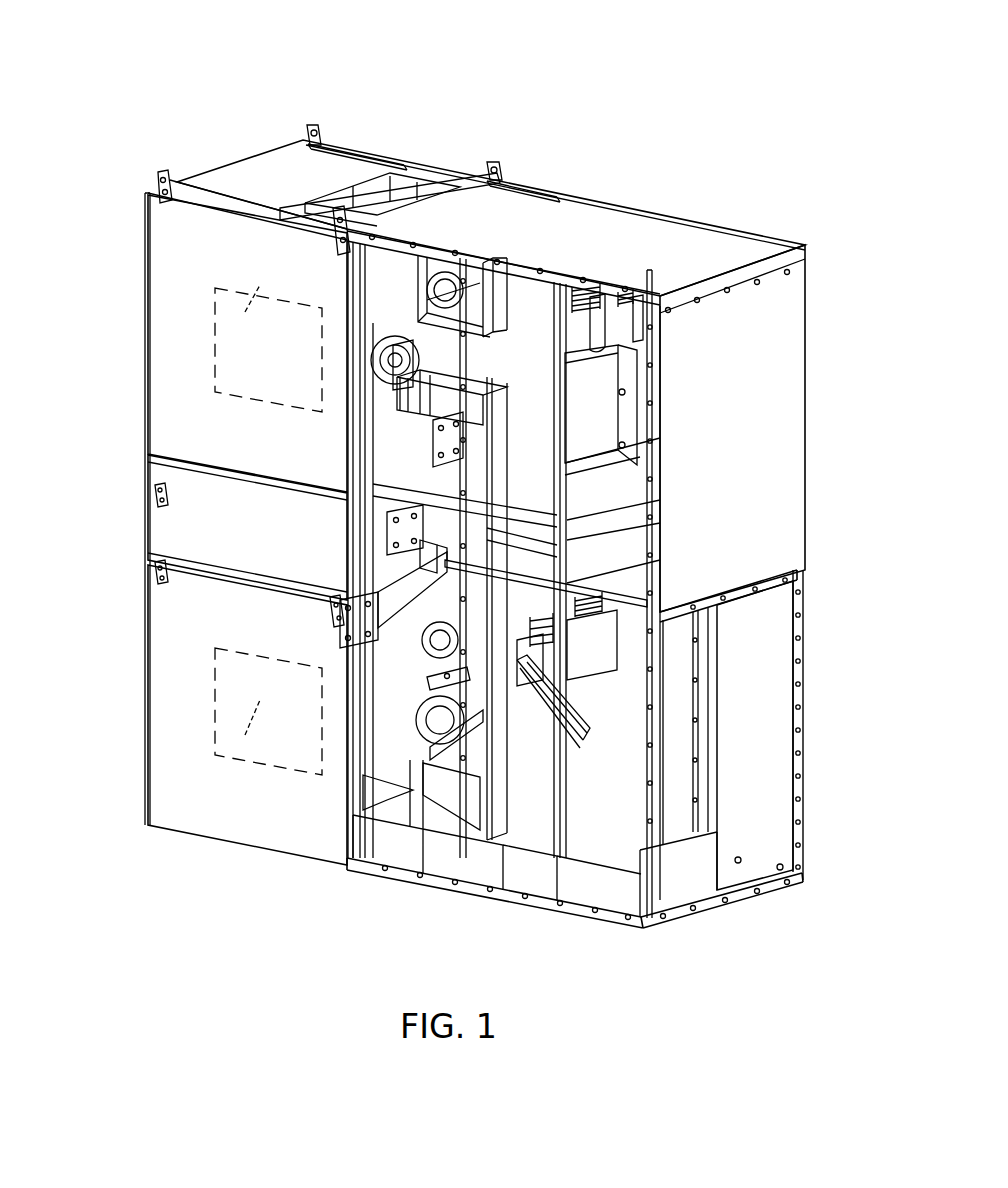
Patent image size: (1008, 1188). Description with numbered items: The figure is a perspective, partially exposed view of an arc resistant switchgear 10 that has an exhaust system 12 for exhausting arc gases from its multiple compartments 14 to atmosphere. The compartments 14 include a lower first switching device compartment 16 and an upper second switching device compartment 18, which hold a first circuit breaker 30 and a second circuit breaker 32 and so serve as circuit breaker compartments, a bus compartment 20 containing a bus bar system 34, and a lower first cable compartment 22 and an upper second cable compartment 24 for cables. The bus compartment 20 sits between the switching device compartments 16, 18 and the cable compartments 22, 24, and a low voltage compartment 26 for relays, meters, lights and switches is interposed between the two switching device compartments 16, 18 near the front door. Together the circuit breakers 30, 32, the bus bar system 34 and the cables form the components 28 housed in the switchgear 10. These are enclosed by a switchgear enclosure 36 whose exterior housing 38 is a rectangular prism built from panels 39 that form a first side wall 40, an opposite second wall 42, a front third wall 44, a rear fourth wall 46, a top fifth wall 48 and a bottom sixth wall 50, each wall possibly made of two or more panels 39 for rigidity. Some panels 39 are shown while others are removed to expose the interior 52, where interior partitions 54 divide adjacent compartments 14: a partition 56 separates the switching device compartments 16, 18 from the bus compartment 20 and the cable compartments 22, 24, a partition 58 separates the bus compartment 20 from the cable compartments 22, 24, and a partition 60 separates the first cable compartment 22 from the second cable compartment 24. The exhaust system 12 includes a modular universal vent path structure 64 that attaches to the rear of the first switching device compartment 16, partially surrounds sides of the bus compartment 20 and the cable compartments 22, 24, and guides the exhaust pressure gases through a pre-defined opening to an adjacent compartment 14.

The arc resistant switchgear 10 is at (645, 65).
The exhaust system 12 is at (543, 848).
The compartments 14 is at (445, 397).
The first switching device compartment 16 is at (175, 782).
The second switching device compartment 18 is at (185, 338).
The bus compartment 20 is at (450, 410).
The first cable compartment 22 is at (762, 770).
The second cable compartment 24 is at (660, 417).
The low voltage compartment 26 is at (180, 518).
The components 28 is at (248, 312).
The first circuit breaker 30 is at (250, 735).
The second circuit breaker 32 is at (240, 320).
The bus bar system 34 is at (377, 617).
The switchgear enclosure 36 is at (738, 892).
The exterior housing 38 is at (783, 512).
The panels 39 is at (720, 244).
The first wall 40 is at (217, 813).
The second wall 42 is at (810, 611).
The third wall 44 is at (147, 462).
The fourth wall 46 is at (790, 300).
The fifth wall 48 is at (472, 212).
The sixth wall 50 is at (480, 888).
The interior 52 is at (762, 690).
The interior partitions 54 is at (660, 370).
The partition 56 is at (383, 440).
The partition 58 is at (660, 350).
The partition 60 is at (617, 590).
The universal vent path structure 64 is at (530, 860).